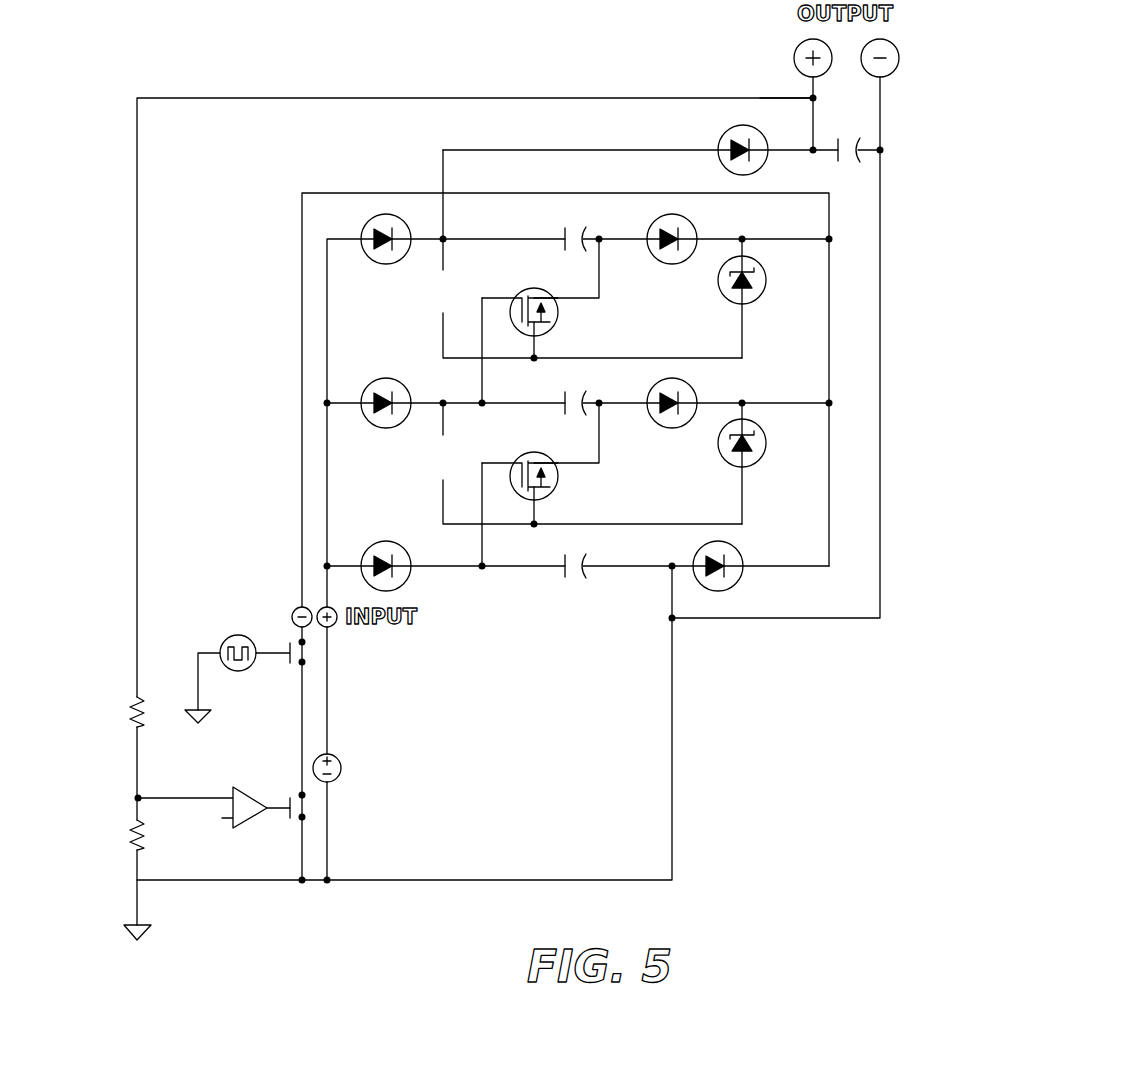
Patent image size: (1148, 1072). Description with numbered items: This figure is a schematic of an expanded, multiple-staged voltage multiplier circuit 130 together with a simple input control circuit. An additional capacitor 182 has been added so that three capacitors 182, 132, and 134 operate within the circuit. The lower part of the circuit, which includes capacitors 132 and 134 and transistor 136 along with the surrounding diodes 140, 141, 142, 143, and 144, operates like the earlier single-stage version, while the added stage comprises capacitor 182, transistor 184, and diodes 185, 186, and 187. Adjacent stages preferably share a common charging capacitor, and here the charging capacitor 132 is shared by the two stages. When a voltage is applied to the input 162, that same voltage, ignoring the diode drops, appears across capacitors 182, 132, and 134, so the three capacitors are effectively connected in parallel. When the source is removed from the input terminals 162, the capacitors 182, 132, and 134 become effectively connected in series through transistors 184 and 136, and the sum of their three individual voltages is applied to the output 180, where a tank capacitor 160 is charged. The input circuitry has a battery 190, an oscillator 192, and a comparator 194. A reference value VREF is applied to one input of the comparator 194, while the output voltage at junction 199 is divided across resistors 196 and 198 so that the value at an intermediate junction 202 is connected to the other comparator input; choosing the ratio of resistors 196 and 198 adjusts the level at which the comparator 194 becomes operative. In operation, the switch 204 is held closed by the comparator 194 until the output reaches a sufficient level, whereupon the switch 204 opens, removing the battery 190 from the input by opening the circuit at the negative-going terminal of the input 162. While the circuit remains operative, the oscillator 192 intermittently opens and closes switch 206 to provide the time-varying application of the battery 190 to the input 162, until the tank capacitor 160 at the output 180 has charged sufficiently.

The voltage multiplier circuit 130 is at (252, 326).
The capacitor 132 is at (591, 404).
The capacitor 134 is at (584, 552).
The transistor 136 is at (560, 478).
The diode 140 is at (392, 428).
The diode 141 is at (406, 582).
The diode 142 is at (674, 428).
The diode 143 is at (738, 548).
The diode 144 is at (750, 466).
The tank capacitor 160 is at (840, 140).
The input 162 is at (284, 602).
The output 180 is at (900, 78).
The capacitor 182 is at (589, 236).
The transistor 184 is at (552, 330).
The diode 185 is at (380, 263).
The diode 186 is at (762, 298).
The diode 187 is at (666, 264).
The battery 190 is at (344, 774).
The oscillator 192 is at (236, 672).
The comparator 194 is at (253, 822).
The resistor 196 is at (134, 702).
The resistor 198 is at (134, 844).
The junction 199 is at (811, 97).
The intermediate junction 202 is at (142, 796).
The switch 204 is at (306, 820).
The switch 206 is at (306, 645).